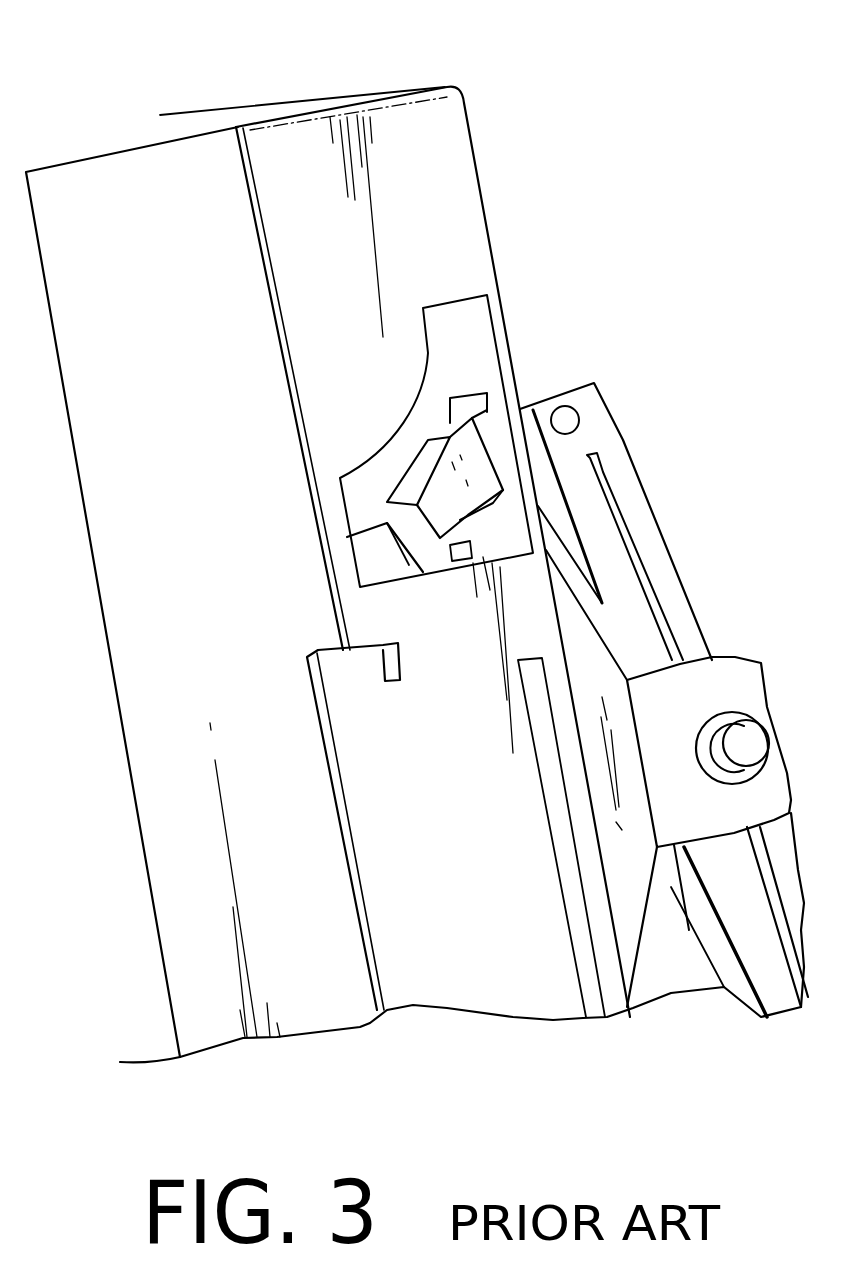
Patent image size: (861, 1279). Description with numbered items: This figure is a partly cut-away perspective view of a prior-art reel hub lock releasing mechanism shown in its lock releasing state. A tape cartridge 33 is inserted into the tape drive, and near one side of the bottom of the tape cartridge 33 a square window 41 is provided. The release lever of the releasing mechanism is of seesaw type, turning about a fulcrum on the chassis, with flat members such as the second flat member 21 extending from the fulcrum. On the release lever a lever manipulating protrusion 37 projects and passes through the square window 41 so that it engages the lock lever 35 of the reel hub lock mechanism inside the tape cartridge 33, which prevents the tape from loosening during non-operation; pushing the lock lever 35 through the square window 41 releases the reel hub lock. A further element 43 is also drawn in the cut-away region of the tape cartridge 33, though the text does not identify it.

The second flat member 21 is at (633, 507).
The tape cartridge 33 is at (410, 133).
The lock lever 35 is at (410, 583).
The lever manipulating protrusion 37 is at (490, 447).
The square window 41 is at (500, 420).
The stop block 43 is at (457, 397).